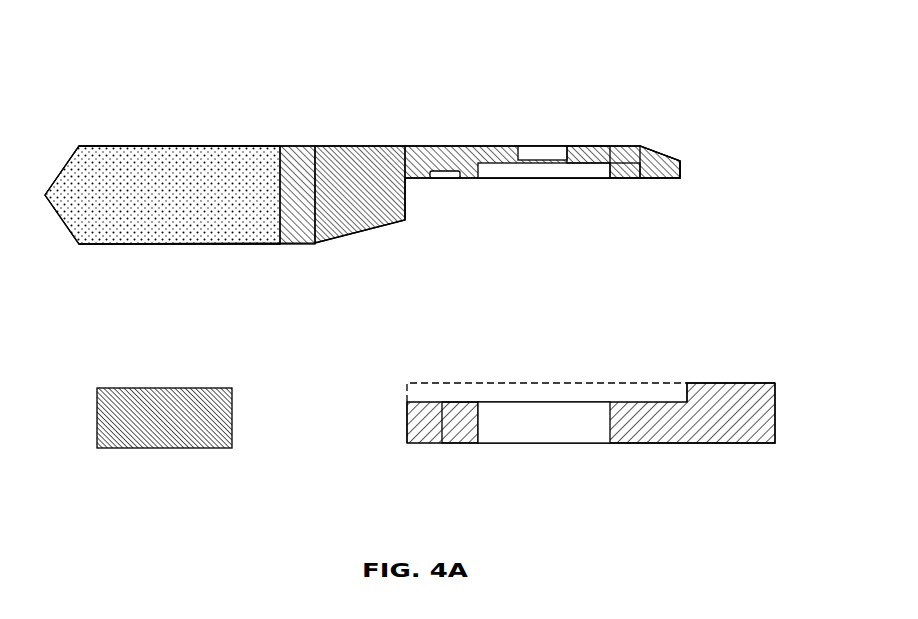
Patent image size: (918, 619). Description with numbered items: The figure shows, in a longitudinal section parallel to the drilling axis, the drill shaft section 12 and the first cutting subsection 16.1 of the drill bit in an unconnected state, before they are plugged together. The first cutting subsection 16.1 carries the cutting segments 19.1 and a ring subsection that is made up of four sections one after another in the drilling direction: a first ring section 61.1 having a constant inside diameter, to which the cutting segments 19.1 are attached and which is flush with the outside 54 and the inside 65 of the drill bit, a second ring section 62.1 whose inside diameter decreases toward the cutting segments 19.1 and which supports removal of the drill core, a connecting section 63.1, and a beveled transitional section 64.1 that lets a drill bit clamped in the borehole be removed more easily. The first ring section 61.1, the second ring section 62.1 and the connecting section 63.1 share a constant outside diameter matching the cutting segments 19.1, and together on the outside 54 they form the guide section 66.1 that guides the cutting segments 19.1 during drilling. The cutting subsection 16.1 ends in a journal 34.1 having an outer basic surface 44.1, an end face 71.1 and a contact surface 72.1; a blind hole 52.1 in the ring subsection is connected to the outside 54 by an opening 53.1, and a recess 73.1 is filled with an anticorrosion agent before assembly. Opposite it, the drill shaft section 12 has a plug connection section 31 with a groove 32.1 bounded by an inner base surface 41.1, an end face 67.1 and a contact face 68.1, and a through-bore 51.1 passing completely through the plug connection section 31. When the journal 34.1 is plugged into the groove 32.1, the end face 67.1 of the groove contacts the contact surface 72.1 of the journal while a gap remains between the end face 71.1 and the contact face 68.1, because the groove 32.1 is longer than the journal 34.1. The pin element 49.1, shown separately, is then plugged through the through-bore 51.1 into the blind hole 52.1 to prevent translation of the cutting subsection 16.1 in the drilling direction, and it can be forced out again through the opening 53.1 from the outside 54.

The first cutting subsection 16.1 is at (188, 71).
The cutting segments 19.1 is at (145, 180).
The outside 54 is at (250, 146).
The inside 65 is at (237, 245).
The first ring section 61.1 is at (300, 228).
The second ring section 62.1 is at (367, 213).
The contact surface 72.1 is at (407, 195).
The guide section 66.1 is at (282, 78).
The recess 73.1 is at (448, 172).
The blind hole 52.1 is at (534, 172).
The opening 53.1 is at (529, 157).
The connecting section 63.1 is at (603, 148).
The outer basic surface 44.1 is at (622, 182).
The transitional section 64.1 is at (669, 150).
The end face 71.1 is at (681, 170).
The journal 34.1 is at (662, 187).
The groove 32.1 is at (542, 397).
The inner base surface 41.1 is at (430, 397).
The contact face 68.1 is at (686, 401).
The end face 67.1 is at (407, 413).
The plug connection section 31 is at (443, 440).
The through-bore 51.1 is at (543, 415).
The drill shaft section 12 is at (725, 415).
The pin element 49.1 is at (146, 418).